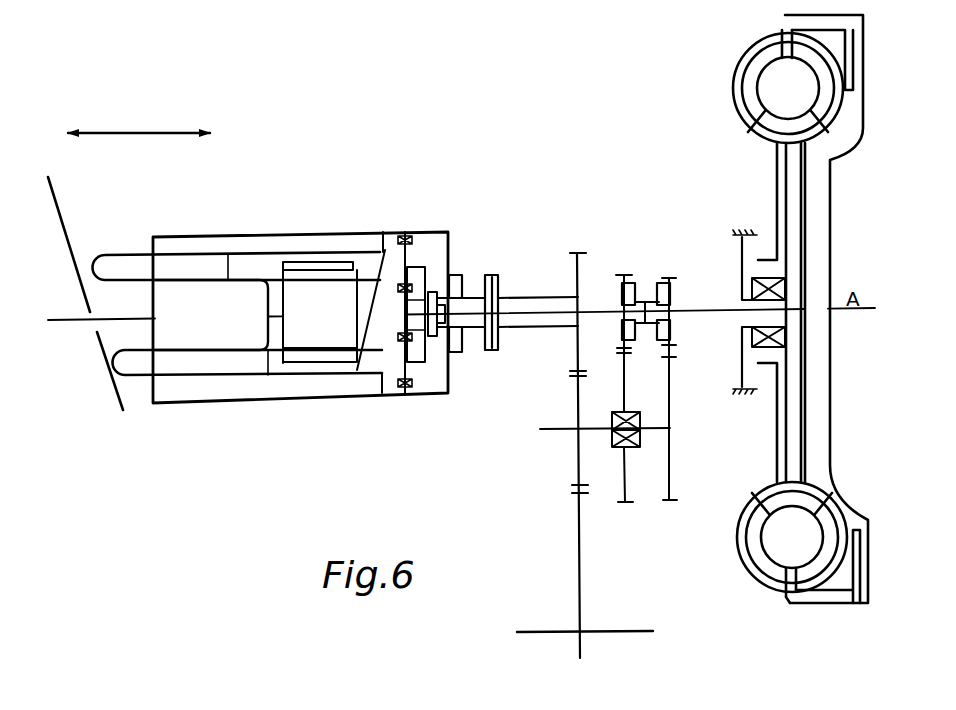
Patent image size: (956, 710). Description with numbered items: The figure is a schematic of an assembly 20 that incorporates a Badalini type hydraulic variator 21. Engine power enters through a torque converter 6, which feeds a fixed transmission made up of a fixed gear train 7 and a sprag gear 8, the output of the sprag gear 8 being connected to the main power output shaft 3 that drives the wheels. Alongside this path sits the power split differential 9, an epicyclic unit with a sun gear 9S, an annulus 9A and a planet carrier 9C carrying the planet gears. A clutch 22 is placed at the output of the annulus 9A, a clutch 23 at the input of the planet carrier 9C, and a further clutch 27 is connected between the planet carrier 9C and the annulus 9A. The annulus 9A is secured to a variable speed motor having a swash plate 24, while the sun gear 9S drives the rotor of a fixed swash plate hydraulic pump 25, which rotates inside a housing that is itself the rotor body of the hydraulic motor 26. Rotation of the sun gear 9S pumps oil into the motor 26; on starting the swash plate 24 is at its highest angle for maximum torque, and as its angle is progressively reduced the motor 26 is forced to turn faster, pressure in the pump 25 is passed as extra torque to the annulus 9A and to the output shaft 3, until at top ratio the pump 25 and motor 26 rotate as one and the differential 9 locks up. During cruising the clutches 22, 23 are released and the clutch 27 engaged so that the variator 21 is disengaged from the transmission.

The main power output shaft 3 is at (527, 630).
The torque converter 6 is at (713, 99).
The fixed gear train 7 is at (641, 271).
The sprag gear 8 is at (615, 455).
The power split differential 9 is at (450, 234).
The annulus 9A is at (416, 225).
The piston 9C is at (420, 305).
The sun gear 9S is at (403, 321).
The assembly 20 is at (484, 200).
The hydraulic variator 21 is at (292, 208).
The clutch 22 is at (487, 274).
The clutch 23 is at (437, 345).
The swash plate 24 is at (62, 212).
The fixed swash plate hydraulic pump 25 is at (317, 333).
The hydraulic motor 26 is at (184, 234).
The clutch 27 is at (512, 345).